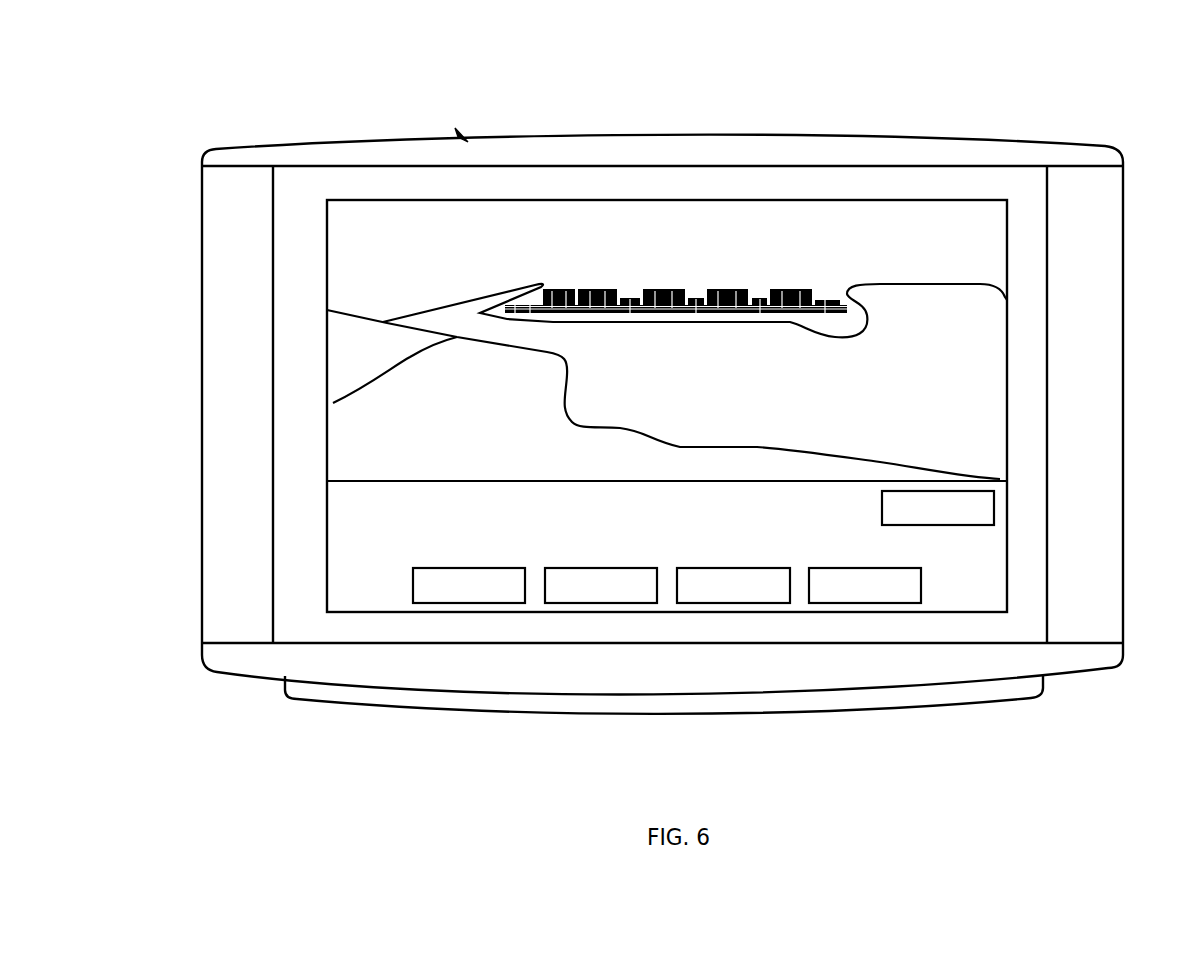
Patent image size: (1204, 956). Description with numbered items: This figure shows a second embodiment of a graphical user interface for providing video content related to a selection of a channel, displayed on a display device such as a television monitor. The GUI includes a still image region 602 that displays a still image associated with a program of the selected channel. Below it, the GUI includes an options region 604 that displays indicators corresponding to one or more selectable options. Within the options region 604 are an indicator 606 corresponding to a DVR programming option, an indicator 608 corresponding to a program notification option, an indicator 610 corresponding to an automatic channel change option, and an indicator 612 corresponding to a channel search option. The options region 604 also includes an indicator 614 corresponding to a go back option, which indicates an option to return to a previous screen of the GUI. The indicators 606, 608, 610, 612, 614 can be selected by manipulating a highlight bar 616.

The still image region 602 is at (417, 307).
The options region 604 is at (380, 485).
The indicator corresponding to a DVR programming option 606 is at (467, 606).
The indicator corresponding to a program notification option 608 is at (607, 606).
The indicator corresponding to an automatic channel change option 610 is at (736, 606).
The indicator corresponding to a channel search option 612 is at (866, 606).
The indicator corresponding to a go back option 614 is at (1000, 505).
The highlight bar 616 is at (807, 678).